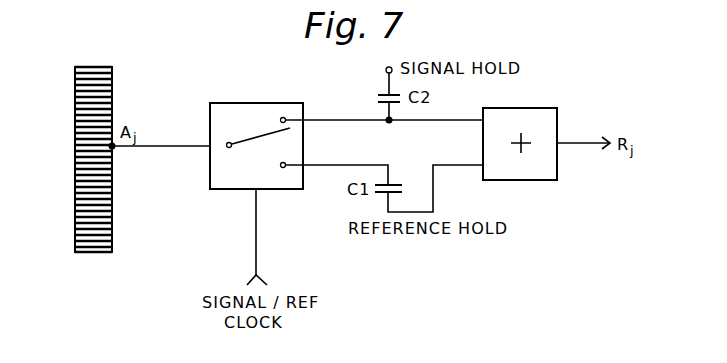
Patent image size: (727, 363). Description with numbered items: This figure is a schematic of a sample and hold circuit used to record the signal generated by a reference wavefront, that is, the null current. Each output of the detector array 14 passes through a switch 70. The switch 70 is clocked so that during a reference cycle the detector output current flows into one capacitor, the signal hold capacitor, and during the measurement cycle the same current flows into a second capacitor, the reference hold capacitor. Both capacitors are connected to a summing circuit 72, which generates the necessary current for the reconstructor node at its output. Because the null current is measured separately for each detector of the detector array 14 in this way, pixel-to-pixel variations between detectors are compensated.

The detector array 14 is at (97, 194).
The switch 70 is at (305, 105).
The summing circuit 72 is at (523, 181).